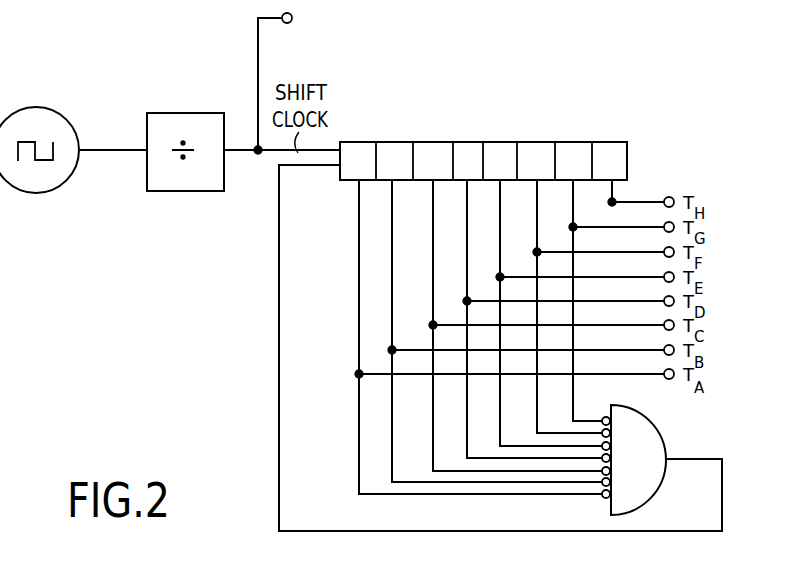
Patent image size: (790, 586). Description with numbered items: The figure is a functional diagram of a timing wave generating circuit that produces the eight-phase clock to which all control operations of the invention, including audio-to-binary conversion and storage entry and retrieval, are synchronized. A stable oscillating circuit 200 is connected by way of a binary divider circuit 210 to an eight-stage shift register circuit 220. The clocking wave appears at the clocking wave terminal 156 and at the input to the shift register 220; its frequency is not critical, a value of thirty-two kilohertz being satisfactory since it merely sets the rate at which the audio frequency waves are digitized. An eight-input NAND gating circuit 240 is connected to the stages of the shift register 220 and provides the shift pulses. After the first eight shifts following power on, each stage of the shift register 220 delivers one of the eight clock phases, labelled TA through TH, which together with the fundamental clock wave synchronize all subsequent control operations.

The stable oscillating circuit 200 is at (58, 118).
The binary divider circuit 210 is at (200, 117).
The clocking wave terminal 156 is at (283, 13).
The eight-stage shift register circuit 220 is at (622, 162).
The 8 input-lead NAND gating circuit 240 is at (658, 442).